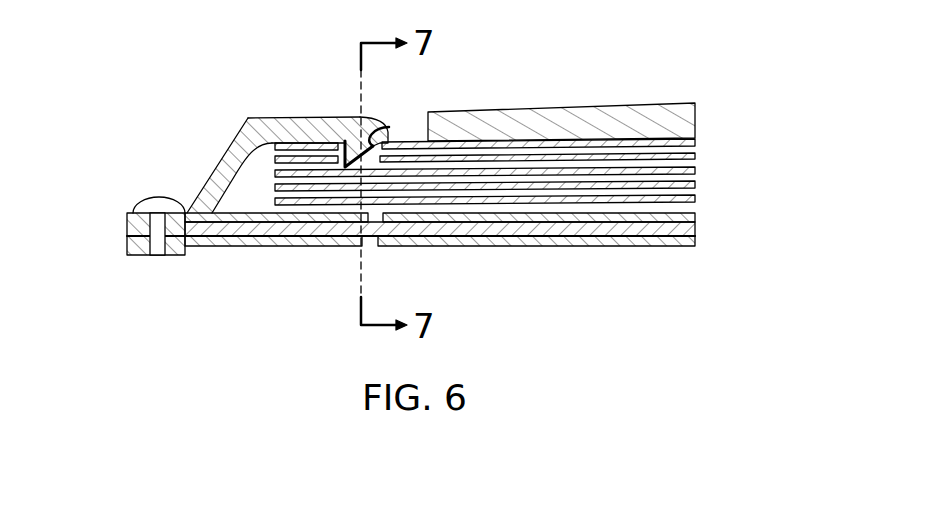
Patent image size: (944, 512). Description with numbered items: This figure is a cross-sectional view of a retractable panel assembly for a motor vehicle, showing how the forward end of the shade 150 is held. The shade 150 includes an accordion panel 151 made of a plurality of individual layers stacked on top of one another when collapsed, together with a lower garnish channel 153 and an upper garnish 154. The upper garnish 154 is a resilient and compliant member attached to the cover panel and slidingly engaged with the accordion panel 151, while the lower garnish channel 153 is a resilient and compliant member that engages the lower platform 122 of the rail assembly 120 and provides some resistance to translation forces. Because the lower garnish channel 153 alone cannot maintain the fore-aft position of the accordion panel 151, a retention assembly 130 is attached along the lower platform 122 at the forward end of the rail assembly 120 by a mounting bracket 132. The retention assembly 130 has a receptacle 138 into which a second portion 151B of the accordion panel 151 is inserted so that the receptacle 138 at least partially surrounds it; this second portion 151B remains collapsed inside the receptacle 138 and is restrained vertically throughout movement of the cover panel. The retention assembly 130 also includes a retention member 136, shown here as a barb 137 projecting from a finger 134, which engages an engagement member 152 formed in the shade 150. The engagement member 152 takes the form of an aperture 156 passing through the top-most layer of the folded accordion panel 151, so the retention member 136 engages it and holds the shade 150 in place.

The rail assembly 120 is at (377, 257).
The lower platform 122 is at (695, 230).
The retention assembly 130 is at (192, 164).
The mounting bracket 132 is at (127, 248).
The finger 134 is at (346, 124).
The retention member 136 is at (339, 152).
The barb 137 is at (344, 142).
The receptacle 138 is at (240, 160).
The shade 150 is at (711, 152).
The accordion panel 151 is at (711, 182).
The second portion of the accordion panel 151B is at (385, 272).
The engagement member 152 is at (372, 133).
The lower garnish channel 153 is at (620, 247).
The upper garnish 154 is at (640, 114).
The aperture 156 is at (388, 126).